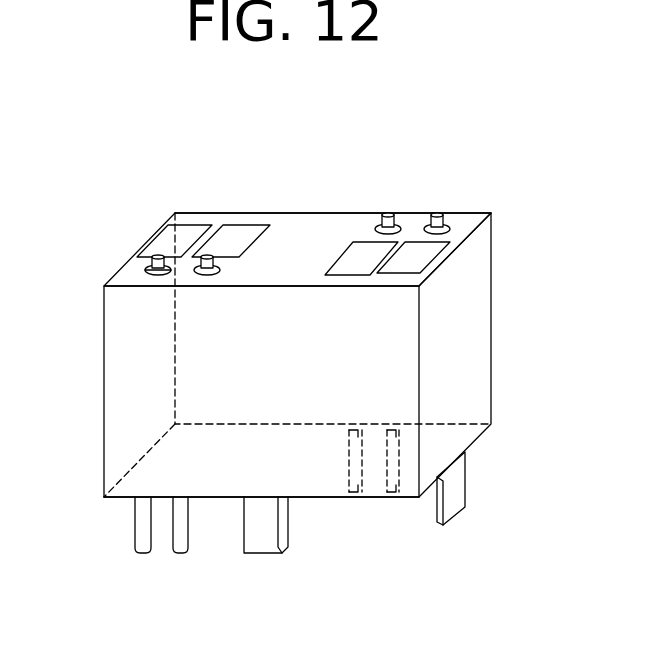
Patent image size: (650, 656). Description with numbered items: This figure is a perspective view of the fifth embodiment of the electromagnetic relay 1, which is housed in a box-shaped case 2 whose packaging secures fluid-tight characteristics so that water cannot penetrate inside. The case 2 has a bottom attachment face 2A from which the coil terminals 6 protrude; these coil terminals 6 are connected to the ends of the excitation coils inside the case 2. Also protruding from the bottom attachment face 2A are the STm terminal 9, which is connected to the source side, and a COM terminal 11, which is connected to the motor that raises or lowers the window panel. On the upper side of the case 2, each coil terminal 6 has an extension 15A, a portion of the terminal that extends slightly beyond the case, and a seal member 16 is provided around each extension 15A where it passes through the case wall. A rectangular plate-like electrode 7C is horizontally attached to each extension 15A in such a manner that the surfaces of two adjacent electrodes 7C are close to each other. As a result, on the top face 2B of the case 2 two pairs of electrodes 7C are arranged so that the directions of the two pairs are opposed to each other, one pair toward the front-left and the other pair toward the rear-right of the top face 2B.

The electromagnetic relay 1 is at (292, 262).
The case 2 is at (128, 327).
The bottom attachment face 2A is at (308, 482).
The top face 2B is at (478, 222).
The coil terminal 6 is at (142, 553).
The rectangular plate-like electrode 7C is at (193, 223).
The STm terminal 9 is at (270, 542).
The COM terminal 11 is at (452, 493).
The extension 15A is at (150, 259).
The seal member 16 is at (146, 270).